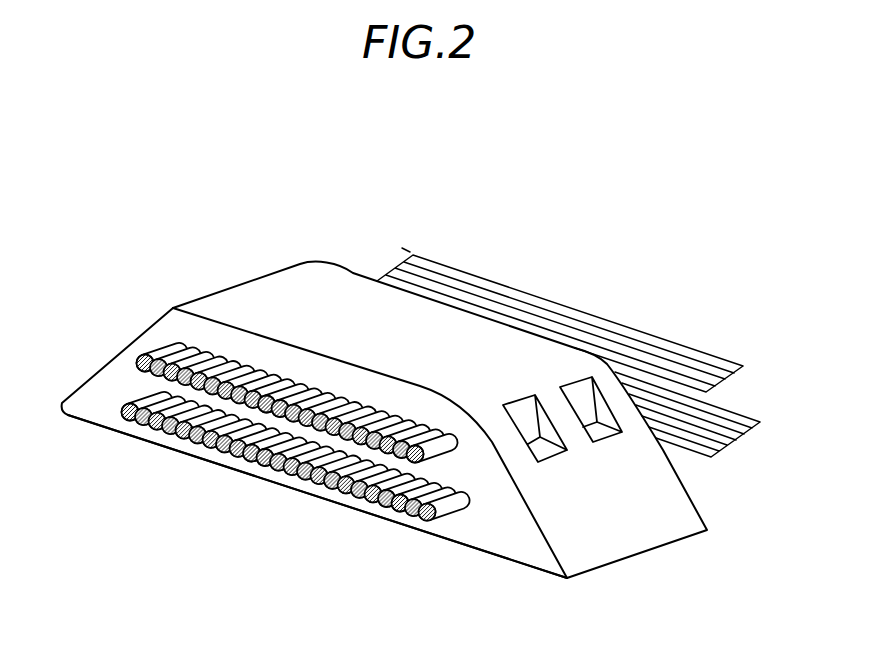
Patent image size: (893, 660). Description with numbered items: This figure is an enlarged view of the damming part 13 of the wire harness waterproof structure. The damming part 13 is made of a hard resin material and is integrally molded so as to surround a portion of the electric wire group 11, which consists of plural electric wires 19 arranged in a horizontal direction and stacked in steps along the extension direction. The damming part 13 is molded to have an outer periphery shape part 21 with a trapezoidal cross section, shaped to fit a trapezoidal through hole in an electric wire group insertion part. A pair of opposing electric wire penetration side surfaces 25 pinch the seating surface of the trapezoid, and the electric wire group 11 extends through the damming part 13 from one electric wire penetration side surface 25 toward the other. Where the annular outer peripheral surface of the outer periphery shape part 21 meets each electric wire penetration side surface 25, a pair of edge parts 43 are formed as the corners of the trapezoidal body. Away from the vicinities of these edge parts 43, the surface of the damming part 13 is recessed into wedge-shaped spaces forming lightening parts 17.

The electric wire group 11 is at (153, 350).
The damming part 13 is at (224, 252).
The lightening part 17 is at (527, 425).
The electric wire 19 is at (197, 362).
The outer periphery shape part 21 is at (358, 296).
The electric wire penetration side surface 25 is at (483, 527).
The edge part 43 is at (534, 517).